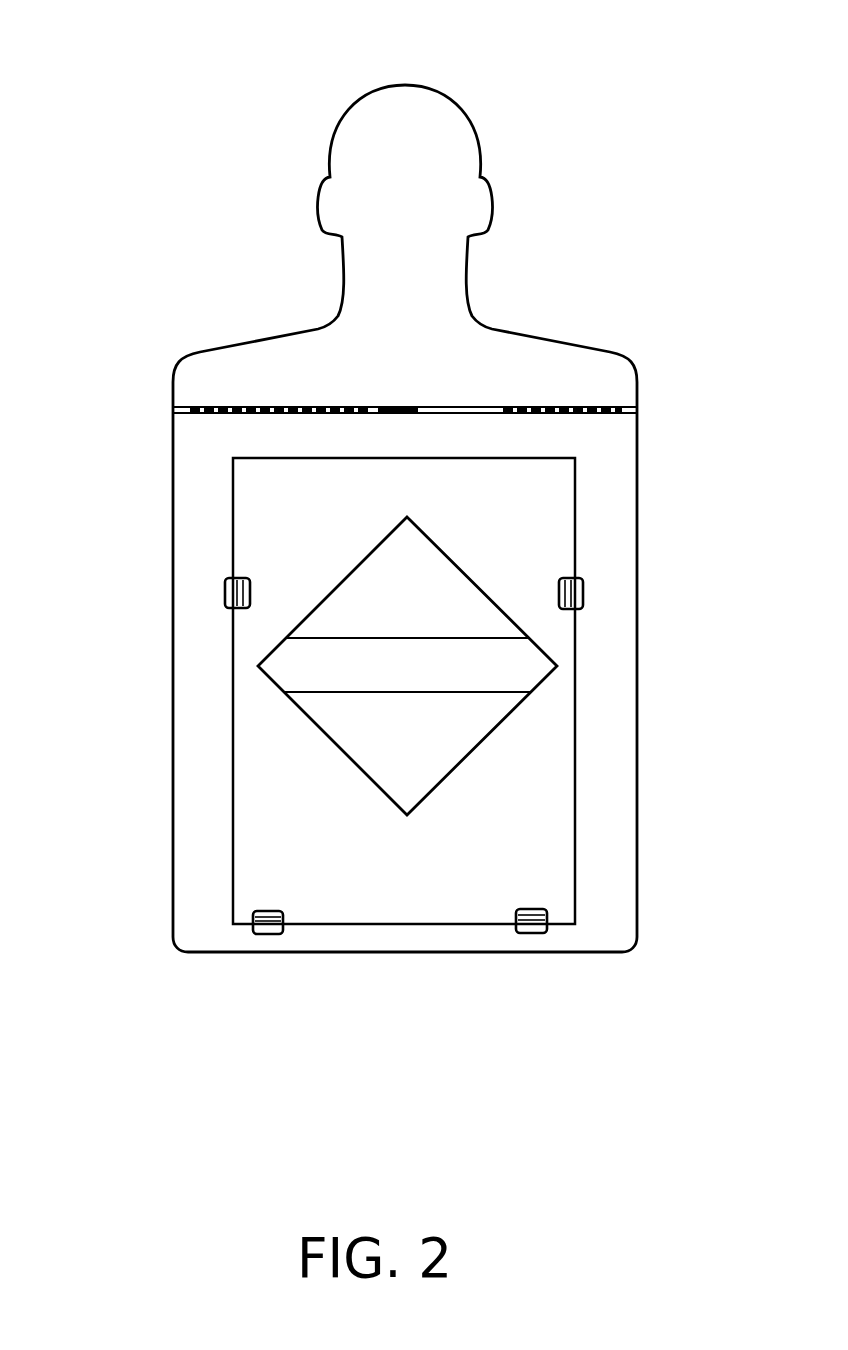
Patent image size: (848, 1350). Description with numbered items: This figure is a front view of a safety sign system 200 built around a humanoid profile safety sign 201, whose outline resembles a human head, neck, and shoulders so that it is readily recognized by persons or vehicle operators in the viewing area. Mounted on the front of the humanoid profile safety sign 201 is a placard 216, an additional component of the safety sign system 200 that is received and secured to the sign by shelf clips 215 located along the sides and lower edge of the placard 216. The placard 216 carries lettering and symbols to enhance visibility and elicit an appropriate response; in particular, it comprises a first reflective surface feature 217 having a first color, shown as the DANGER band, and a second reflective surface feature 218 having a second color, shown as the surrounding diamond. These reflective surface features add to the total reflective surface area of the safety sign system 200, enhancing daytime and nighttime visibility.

The safety sign system 200 is at (61, 32).
The humanoid profile safety sign 201 is at (221, 320).
The shelf clips 215 is at (223, 597).
The placard 216 is at (575, 770).
The first reflective surface feature 217 is at (273, 680).
The second reflective surface feature 218 is at (322, 731).